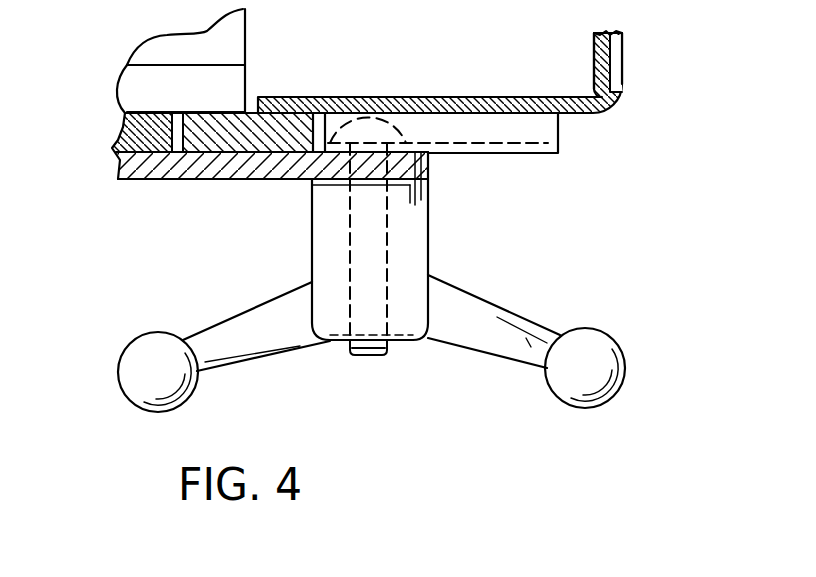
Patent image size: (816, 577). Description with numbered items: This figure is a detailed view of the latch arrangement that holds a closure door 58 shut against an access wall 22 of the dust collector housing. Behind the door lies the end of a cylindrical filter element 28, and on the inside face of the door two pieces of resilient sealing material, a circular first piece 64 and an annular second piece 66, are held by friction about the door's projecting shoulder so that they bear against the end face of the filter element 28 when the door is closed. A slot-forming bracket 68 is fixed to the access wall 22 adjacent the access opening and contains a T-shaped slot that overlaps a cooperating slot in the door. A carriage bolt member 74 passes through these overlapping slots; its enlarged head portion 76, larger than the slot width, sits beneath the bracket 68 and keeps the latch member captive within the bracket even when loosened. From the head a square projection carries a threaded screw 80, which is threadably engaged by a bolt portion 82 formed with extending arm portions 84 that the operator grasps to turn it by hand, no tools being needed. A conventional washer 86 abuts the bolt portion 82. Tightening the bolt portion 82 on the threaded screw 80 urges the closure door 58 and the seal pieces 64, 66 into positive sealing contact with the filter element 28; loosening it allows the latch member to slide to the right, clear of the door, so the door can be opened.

The access wall 22 is at (603, 112).
The filter element 28 is at (213, 77).
The closure door 58 is at (198, 172).
The first piece of resilient sealing material 64 is at (113, 148).
The second piece of resilient sealing material 66 is at (287, 97).
The slot-forming bracket 68 is at (535, 153).
The carriage bolt member 74 is at (410, 360).
The enlarged head portion 76 is at (405, 137).
The threaded screw 80 is at (395, 250).
The bolt portion 82 is at (433, 267).
The extending arm portions 84 is at (545, 332).
The washer 86 is at (430, 178).